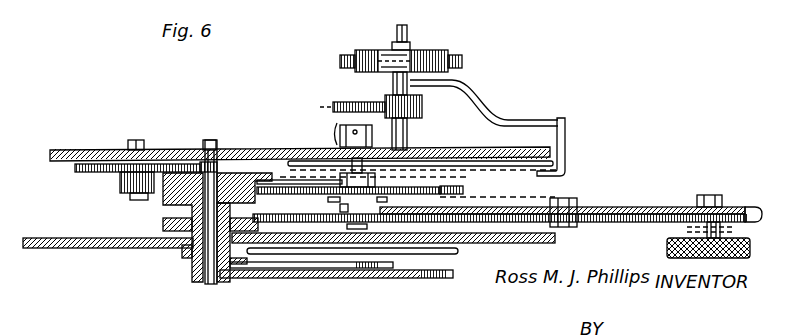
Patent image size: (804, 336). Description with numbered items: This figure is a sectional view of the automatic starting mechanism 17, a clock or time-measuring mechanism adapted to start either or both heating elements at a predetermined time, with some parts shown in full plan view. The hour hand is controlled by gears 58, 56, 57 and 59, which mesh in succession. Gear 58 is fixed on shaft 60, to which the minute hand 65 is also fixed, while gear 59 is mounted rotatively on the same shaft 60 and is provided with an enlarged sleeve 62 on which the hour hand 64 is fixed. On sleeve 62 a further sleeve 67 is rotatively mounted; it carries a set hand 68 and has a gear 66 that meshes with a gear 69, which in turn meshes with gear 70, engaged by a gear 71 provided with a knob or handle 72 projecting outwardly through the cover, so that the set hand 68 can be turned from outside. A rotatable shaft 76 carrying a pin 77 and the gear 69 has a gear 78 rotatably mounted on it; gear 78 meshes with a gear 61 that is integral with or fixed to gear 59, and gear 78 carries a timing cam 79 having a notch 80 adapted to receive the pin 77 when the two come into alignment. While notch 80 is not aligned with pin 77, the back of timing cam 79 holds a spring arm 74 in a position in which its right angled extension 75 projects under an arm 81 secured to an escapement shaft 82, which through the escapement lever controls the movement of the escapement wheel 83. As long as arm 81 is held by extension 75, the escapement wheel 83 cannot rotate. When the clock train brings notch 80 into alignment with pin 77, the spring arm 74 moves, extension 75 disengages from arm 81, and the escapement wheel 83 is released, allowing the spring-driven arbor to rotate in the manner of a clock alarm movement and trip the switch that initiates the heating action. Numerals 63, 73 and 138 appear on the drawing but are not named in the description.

The automatic starting mechanism 17 is at (385, 61).
The gear 56 is at (75, 168).
The gear 57 is at (120, 181).
The gear 58 is at (232, 150).
The gear 59 is at (278, 168).
The shaft 60 is at (224, 134).
The gear 61 is at (163, 196).
The enlarged sleeve 62 is at (195, 272).
The arm 63 is at (118, 248).
The hour hand 64 is at (340, 265).
The minute hand 65 is at (418, 281).
The gear 66 is at (163, 226).
The sleeve 67 is at (182, 253).
The set hand 68 is at (457, 253).
The gear 69 is at (292, 190).
The gear 70 is at (598, 223).
The gear 71 is at (762, 214).
The knob or handle 72 is at (667, 248).
The plate 73 is at (468, 148).
The spring arm 74 is at (566, 198).
The right angled extension 75 is at (566, 146).
The rotatable shaft 76 is at (367, 121).
The pin 77 is at (343, 208).
The gear 78 is at (465, 190).
The timing cam 79 is at (387, 197).
The notch 80 is at (392, 172).
The arm 81 is at (527, 122).
The escapement shaft 82 is at (412, 45).
The escapement wheel 83 is at (376, 72).
The stud 138 is at (150, 134).